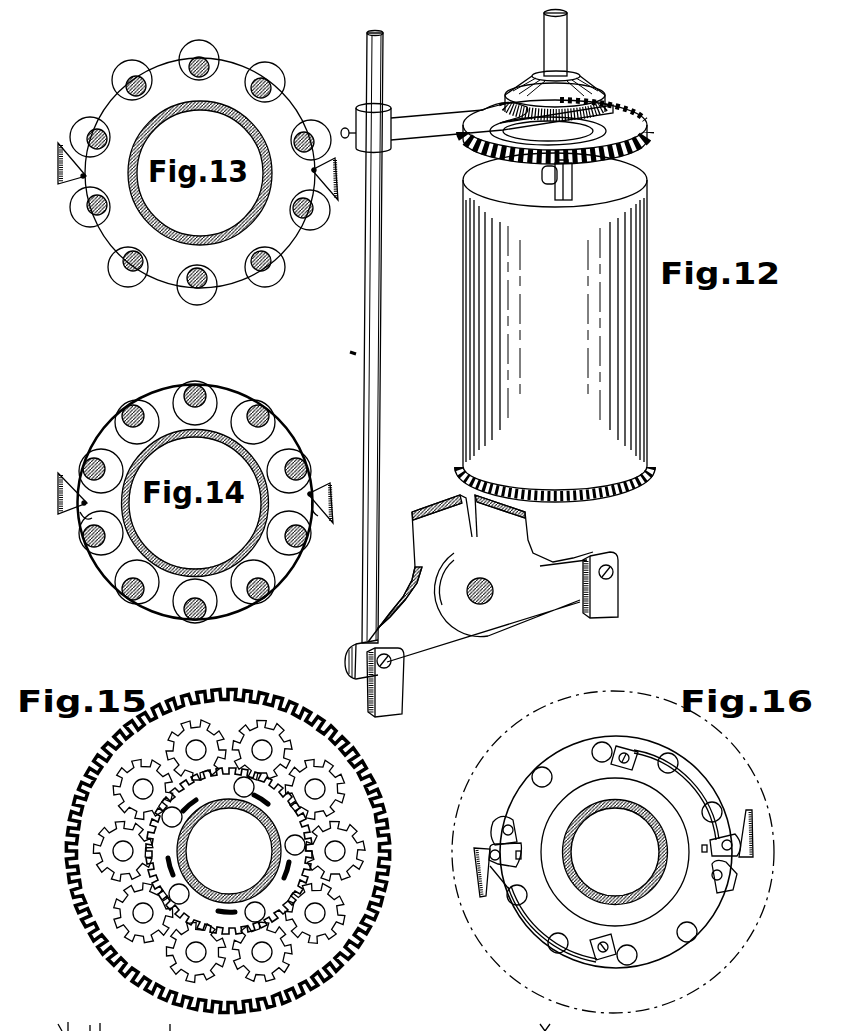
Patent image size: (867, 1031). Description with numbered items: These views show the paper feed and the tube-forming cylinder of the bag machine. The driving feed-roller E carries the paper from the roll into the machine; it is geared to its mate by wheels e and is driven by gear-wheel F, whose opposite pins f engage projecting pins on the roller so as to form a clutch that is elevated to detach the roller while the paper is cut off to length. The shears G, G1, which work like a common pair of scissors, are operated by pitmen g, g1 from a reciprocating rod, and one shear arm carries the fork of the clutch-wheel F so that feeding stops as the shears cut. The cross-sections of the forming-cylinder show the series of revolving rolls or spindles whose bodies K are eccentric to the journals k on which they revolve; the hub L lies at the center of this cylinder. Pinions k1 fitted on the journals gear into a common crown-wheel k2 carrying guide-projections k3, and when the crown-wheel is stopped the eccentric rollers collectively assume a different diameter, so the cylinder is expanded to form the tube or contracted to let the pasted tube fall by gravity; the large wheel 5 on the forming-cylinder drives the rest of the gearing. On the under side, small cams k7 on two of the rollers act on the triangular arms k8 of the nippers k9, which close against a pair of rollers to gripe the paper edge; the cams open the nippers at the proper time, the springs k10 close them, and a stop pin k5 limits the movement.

In FIG. 13, the hub ring L is at (200, 173).
In FIG. 14, the hub ring L is at (195, 503).
In FIG. 13, the roller or spindle K is at (198, 172).
In FIG. 14, the roller or spindle K is at (195, 502).
In FIG. 13, the journal k is at (200, 172).
In FIG. 14, the journal k is at (195, 502).
In FIG. 15, the journal k is at (229, 852).
In FIG. 16, the journal k is at (614, 853).
In FIG. 14, the nippers k9 is at (186, 498).
In FIG. 16, the nippers k9 is at (760, 834).
In FIG. 12, the gear-wheel F is at (567, 132).
In FIG. 12, the pin f is at (571, 186).
In FIG. 12, the gear wheel e is at (557, 334).
In FIG. 12, the feed-roller E is at (555, 321).
In FIG. 12, the shear G is at (420, 568).
In FIG. 12, the shear G1 is at (490, 578).
In FIG. 12, the pitman g is at (600, 595).
In FIG. 12, the pitman g1 is at (394, 682).
In FIG. 15, the large wheel 5 is at (228, 850).
In FIG. 15, the pinion k1 is at (336, 796).
In FIG. 15, the crown-wheel k2 is at (293, 832).
In FIG. 15, the guide-projection k3 is at (233, 849).
In FIG. 16, the cam k7 is at (505, 826).
In FIG. 16, the triangular arm k8 is at (510, 860).
In FIG. 16, the spring k10 is at (613, 854).
In FIG. 16, the stop pin k5 is at (703, 838).